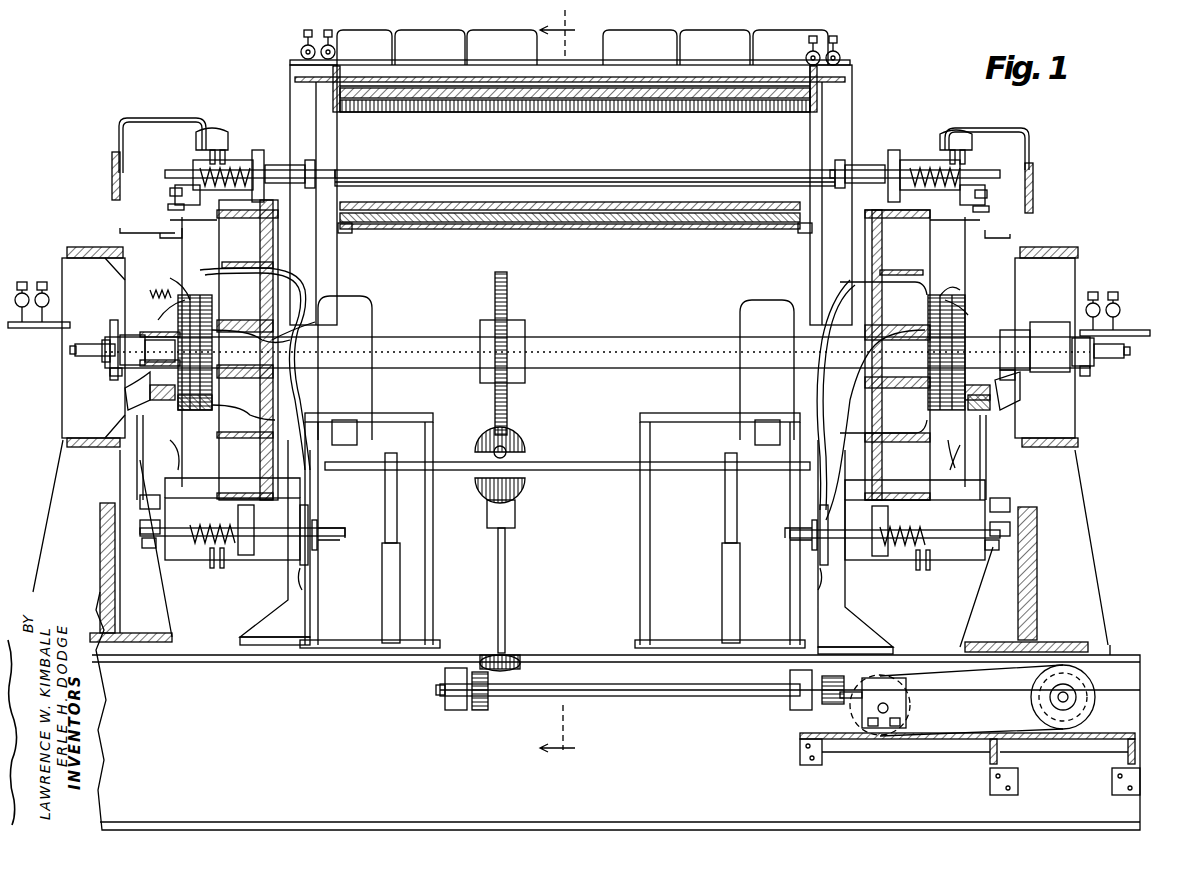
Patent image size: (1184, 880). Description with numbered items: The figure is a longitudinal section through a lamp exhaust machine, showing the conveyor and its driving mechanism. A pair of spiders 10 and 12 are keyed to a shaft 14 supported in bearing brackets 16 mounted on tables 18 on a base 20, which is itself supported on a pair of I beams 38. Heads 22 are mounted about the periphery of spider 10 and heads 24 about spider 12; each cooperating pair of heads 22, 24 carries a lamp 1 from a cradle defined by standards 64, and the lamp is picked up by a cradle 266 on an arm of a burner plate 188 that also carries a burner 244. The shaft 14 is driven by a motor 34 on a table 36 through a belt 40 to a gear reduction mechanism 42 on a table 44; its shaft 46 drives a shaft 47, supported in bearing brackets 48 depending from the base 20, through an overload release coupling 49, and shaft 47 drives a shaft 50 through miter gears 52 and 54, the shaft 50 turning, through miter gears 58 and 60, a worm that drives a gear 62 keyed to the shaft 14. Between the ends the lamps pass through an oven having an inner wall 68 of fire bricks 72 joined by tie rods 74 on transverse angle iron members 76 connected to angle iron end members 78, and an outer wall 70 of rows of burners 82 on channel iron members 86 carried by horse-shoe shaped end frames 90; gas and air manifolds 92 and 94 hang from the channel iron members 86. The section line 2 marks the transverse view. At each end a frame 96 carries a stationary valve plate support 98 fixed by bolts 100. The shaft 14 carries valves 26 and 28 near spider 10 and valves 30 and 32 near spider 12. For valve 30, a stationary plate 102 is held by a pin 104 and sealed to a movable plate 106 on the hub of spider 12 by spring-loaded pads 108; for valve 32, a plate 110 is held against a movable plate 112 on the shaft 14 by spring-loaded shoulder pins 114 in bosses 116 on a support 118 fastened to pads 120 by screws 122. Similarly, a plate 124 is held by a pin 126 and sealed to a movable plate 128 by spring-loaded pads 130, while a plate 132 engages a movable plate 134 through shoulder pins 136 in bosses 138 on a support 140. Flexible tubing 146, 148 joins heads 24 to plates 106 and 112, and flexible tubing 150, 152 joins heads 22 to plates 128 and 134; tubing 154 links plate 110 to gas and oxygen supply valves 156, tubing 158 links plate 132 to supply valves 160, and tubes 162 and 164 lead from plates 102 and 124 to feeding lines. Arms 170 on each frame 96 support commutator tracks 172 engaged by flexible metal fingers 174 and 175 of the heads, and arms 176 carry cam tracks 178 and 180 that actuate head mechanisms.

The lamp 1 is at (520, 170).
The section line 2- 2 is at (565, 387).
The spider 10 is at (873, 238).
The spider 12 is at (273, 236).
The shaft 14 is at (412, 337).
The bearing bracket 16 is at (355, 302).
The table 18 is at (410, 413).
The base 20 is at (575, 658).
The head 22 is at (886, 136).
The head 24 is at (242, 123).
The valve 26 is at (948, 286).
The valve 28 is at (1040, 400).
The valve 30 is at (202, 266).
The valve 32 is at (124, 394).
The motor 34 is at (1094, 690).
The table 36 is at (1118, 733).
The I beam 38 is at (1120, 821).
The belt 40 is at (960, 688).
The gear reduction mechanism 42 is at (900, 712).
The table 44 is at (962, 750).
The shaft 46 is at (852, 702).
The shaft 47 is at (708, 700).
The bearing bracket 48 is at (455, 714).
The overload release coupling 49 is at (836, 676).
The shaft 50 is at (510, 570).
The miter gear 52 is at (490, 712).
The miter gear 54 is at (522, 674).
The miter gear 58 is at (522, 494).
The miter gear 60 is at (515, 440).
The gear 62 is at (510, 292).
The standard 64 is at (392, 508).
The inner wall 68 is at (642, 248).
The outer wall 70 is at (630, 62).
The fire brick 72 is at (478, 232).
The tie rod 74 is at (686, 232).
The transverse angle iron member 76 is at (572, 232).
The angle iron end member 78 is at (352, 236).
The burner 82 is at (668, 115).
The channel iron member 86 is at (408, 62).
The horse-shoe shaped end frame 90 is at (296, 104).
The gas manifold 92 is at (300, 52).
The air manifold 94 is at (336, 53).
The frame 96 is at (62, 472).
The stationary valve plate support 98 is at (160, 404).
The bolt 100 is at (90, 258).
The plate 102 is at (190, 412).
The pin 104 is at (139, 420).
The movable plate 106 is at (212, 314).
The spring-loaded pad 108 is at (160, 292).
The plate 110 is at (130, 335).
The movable plate 112 is at (160, 349).
The spring-loaded shoulder pin 114 is at (76, 352).
The boss 116 is at (98, 342).
The support 118 is at (112, 322).
The pad 120 is at (105, 268).
The screw 122 is at (112, 374).
The plate 124 is at (950, 414).
The pin 126 is at (988, 412).
The movable plate 128 is at (928, 305).
The spring-loaded pad 130 is at (1065, 292).
The plate 132 is at (1030, 336).
The movable plate 134 is at (1015, 382).
The spring-loaded shoulder pin 136 is at (1110, 362).
The boss 138 is at (1090, 378).
The support 140 is at (1110, 292).
The flexible tubing 146 is at (305, 296).
The flexible tubing 148 is at (300, 328).
The flexible tubing 150 is at (872, 320).
The flexible tubing 152 is at (840, 302).
The tubing 154 is at (60, 328).
The gas and oxygen supply valve 156 is at (30, 290).
The tubing 158 is at (1072, 352).
The gas and oxygen supply valve 160 is at (1118, 305).
The tube 162 is at (172, 280).
The tube 164 is at (1005, 302).
The arm 170 is at (148, 118).
The commutator track 172 is at (218, 125).
The flexible metal finger 174 is at (208, 153).
The flexible metal finger 175 is at (232, 152).
The arm 176 is at (148, 232).
The cam track 178 is at (148, 550).
The cam track 180 is at (172, 190).
The burner plate 188 is at (310, 522).
The burner 244 is at (306, 578).
The cradle 266 is at (328, 542).